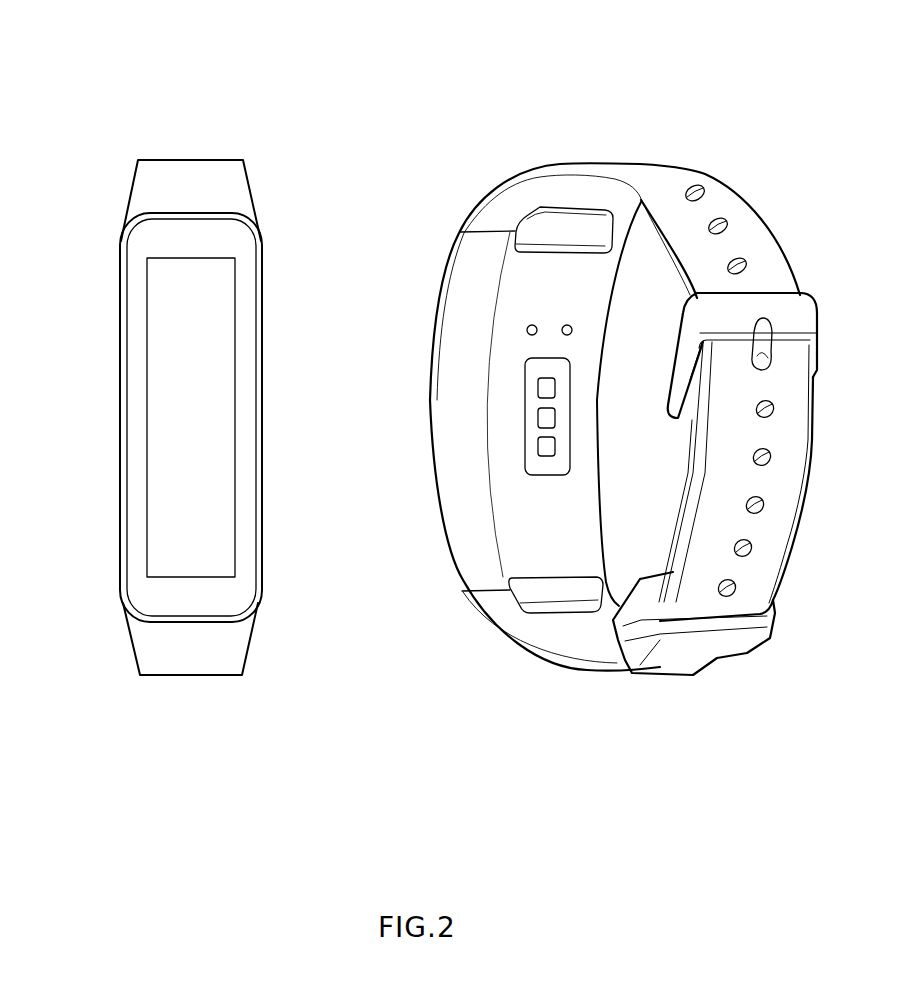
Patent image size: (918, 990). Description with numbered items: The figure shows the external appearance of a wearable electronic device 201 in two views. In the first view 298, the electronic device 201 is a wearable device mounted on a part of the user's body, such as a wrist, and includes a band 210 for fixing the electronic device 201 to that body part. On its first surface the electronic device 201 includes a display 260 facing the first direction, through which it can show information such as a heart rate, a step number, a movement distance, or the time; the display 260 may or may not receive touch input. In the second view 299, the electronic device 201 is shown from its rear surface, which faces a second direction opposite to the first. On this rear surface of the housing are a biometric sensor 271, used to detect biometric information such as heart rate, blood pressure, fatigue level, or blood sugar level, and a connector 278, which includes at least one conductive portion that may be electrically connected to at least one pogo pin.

The electronic device 201 is at (102, 126).
The band 210 is at (192, 170).
The display 260 is at (140, 402).
The biometric sensor 271 is at (540, 416).
The connector 278 is at (565, 326).
The front view 298 is at (210, 771).
The rear view 299 is at (645, 771).